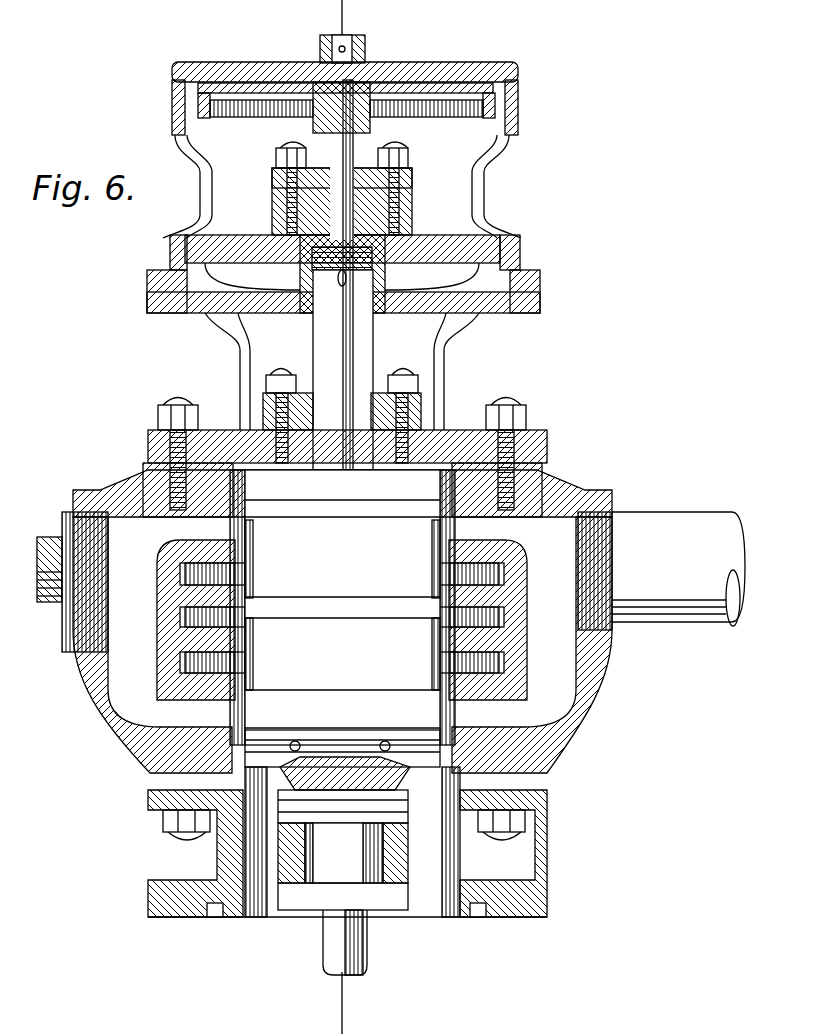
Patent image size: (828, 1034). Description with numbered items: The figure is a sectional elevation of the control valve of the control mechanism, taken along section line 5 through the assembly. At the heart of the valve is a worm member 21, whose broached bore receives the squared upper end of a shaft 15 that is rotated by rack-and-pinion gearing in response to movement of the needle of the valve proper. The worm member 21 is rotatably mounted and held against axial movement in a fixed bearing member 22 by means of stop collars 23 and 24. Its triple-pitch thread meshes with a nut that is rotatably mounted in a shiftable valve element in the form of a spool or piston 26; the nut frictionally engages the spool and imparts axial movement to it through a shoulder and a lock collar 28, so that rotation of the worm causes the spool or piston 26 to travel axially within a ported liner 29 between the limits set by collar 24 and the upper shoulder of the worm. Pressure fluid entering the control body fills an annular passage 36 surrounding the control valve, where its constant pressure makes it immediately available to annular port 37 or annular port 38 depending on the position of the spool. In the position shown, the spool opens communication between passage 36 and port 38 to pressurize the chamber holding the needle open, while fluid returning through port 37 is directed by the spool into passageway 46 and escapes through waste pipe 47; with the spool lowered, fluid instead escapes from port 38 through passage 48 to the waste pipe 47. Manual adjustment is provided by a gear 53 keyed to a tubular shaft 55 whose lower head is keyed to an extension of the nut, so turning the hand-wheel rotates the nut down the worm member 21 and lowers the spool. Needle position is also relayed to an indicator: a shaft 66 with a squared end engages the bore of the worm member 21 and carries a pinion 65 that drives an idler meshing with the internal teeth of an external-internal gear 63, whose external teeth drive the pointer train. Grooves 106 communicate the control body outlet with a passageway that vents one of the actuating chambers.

The section line 5— 5 is at (356, 14).
The external-internal gear 63 is at (384, 83).
The pinion 65 is at (315, 108).
The shaft 66 is at (350, 150).
The gear 53 is at (190, 253).
The tubular shaft 55 is at (332, 326).
The passageway 46 is at (346, 556).
The waste pipe 47 is at (660, 522).
The ported liner 29 is at (182, 574).
The annular port 37 is at (172, 597).
The annular passage 36 is at (185, 628).
The annular port 38 is at (180, 665).
The spool or piston 26 is at (342, 607).
The passage 48 is at (346, 674).
The stop collar 24 is at (302, 795).
The lock collar 28 is at (358, 748).
The worm member 21 is at (343, 836).
The fixed bearing member 22 is at (287, 857).
The shaft 15 is at (330, 944).
The stop collar 23 is at (366, 900).
The grooves 106 is at (213, 915).